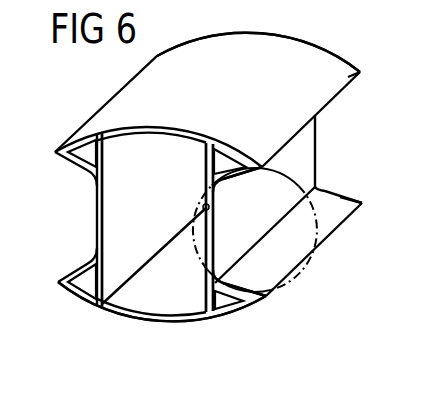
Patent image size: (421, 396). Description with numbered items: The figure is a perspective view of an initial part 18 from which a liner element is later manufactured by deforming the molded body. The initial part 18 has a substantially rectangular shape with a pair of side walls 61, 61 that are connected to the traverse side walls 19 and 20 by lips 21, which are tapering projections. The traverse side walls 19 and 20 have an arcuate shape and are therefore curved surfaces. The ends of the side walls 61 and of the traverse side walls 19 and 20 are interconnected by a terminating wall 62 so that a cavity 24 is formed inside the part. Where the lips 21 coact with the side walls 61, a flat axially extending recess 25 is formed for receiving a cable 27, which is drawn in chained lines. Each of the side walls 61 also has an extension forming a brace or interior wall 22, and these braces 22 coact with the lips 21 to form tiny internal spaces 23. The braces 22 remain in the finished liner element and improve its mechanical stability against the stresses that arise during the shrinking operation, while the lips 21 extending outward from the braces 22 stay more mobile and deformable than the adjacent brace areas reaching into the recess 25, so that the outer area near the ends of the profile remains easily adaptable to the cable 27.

The initial part 18 is at (373, 15).
The traverse side wall 19 is at (222, 48).
The traverse side wall 20 is at (149, 318).
The lips 21 is at (391, 78).
The braces or interior walls 22 is at (206, 290).
The tiny internal spaces 23 is at (226, 311).
The cavity 24 is at (125, 297).
The flat axially extending recess 25 is at (358, 138).
The cable 27 is at (343, 272).
The side walls 61 is at (157, 184).
The terminating wall 62 is at (206, 151).